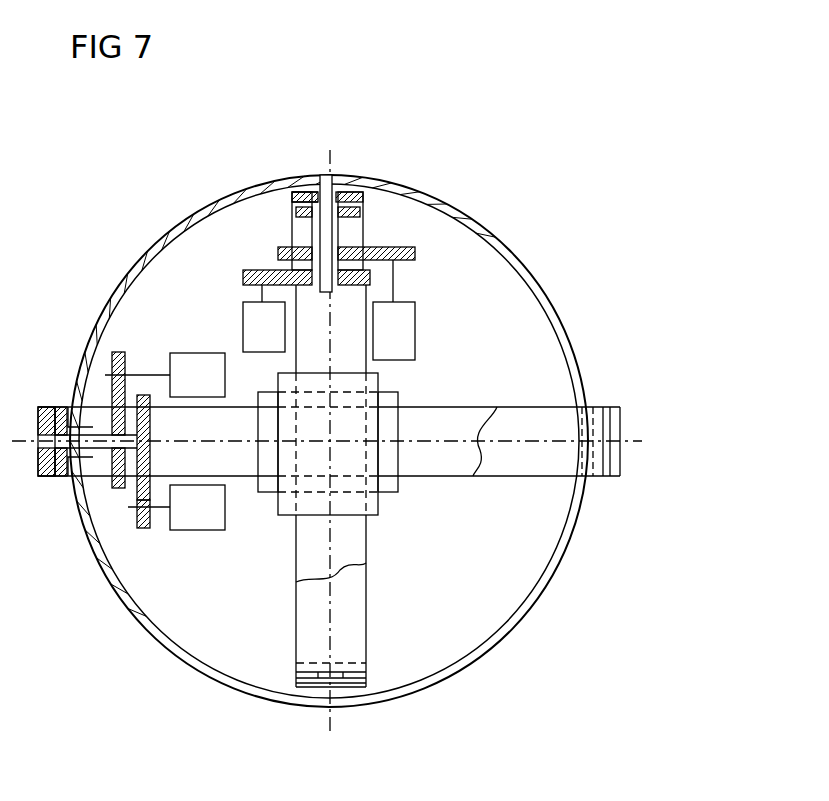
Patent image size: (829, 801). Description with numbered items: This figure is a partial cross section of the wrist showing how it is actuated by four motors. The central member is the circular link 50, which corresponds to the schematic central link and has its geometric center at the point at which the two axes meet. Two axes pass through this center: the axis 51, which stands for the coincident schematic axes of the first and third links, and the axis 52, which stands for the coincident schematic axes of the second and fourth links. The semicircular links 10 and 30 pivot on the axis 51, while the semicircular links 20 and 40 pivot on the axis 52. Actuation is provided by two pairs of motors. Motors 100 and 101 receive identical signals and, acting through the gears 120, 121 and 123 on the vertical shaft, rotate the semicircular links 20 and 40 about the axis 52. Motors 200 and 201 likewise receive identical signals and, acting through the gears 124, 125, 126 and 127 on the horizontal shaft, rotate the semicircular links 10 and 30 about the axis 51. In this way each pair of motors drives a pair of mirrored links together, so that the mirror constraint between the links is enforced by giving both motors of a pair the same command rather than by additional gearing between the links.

The semicircular link 10 is at (45, 470).
The semicircular link 20 is at (300, 193).
The semicircular link 30 is at (62, 480).
The semicircular link 40 is at (298, 217).
The circular link 50 is at (548, 290).
The axis 51 is at (442, 441).
The axis 52 is at (330, 585).
The motor 100 is at (401, 341).
The motor 101 is at (252, 318).
The gear 120 is at (400, 250).
The gear 121 is at (352, 252).
The gear 123 is at (252, 278).
The gear 124 is at (112, 365).
The gear 125 is at (76, 406).
The gear 126 is at (143, 413).
The gear 127 is at (143, 528).
The motor 200 is at (165, 375).
The motor 201 is at (190, 522).